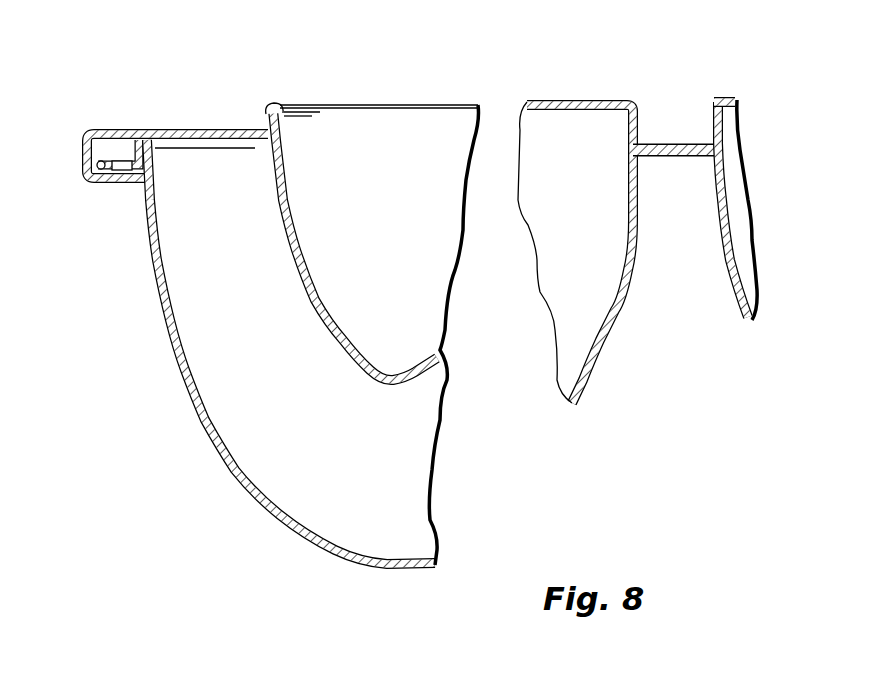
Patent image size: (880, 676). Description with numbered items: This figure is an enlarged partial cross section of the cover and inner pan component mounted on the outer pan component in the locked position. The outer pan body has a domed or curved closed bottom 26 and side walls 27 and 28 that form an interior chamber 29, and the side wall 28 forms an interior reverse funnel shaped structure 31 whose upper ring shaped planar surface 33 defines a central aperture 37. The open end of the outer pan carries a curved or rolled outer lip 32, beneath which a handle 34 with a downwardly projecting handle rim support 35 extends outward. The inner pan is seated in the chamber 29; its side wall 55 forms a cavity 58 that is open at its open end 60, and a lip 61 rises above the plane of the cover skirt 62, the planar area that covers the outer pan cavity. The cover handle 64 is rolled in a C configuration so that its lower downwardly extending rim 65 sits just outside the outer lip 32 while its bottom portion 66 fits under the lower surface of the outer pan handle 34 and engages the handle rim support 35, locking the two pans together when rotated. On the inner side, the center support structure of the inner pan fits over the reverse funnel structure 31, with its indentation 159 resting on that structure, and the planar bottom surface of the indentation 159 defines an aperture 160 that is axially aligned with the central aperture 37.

The closed bottom 26 is at (386, 570).
The side wall 27 is at (204, 424).
The side wall 28 is at (612, 300).
The interior chamber 29 is at (316, 412).
The interior reverse funnel shaped structure 31 is at (628, 186).
The outer lip 32 is at (152, 138).
The upper ring shaped planar surface 33 is at (722, 150).
The handle 34 is at (124, 178).
The handle rim support 35 is at (122, 162).
The central aperture 37 is at (686, 158).
The side wall 55 is at (294, 262).
The cavity 58 is at (420, 335).
The open end 60 is at (400, 105).
The lip 61 is at (278, 108).
The cover skirt 62 is at (228, 130).
The handle 64 is at (106, 132).
The rim 65 is at (84, 158).
The bottom portion 66 is at (104, 180).
The indentation 159 is at (641, 110).
The aperture 160 is at (680, 144).